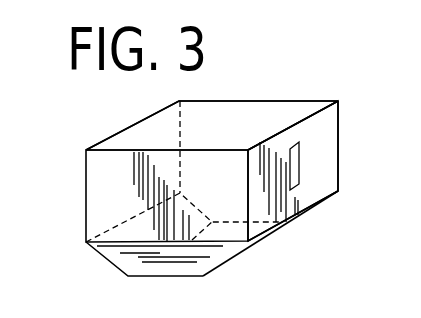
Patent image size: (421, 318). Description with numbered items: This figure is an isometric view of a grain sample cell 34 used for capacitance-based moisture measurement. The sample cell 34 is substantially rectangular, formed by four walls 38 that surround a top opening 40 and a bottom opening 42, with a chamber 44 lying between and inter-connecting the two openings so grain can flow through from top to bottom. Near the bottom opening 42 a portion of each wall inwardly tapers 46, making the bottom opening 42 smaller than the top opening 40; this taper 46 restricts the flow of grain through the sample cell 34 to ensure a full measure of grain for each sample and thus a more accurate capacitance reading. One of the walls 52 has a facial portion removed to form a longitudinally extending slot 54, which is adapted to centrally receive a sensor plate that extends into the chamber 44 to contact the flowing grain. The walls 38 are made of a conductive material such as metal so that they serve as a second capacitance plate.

The sample cell 34 is at (105, 124).
The walls 38 is at (120, 200).
The top opening 40 is at (236, 116).
The bottom opening 42 is at (183, 274).
The chamber 44 is at (180, 140).
The taper 46 is at (114, 265).
The wall 52 is at (318, 142).
The slot 54 is at (300, 178).